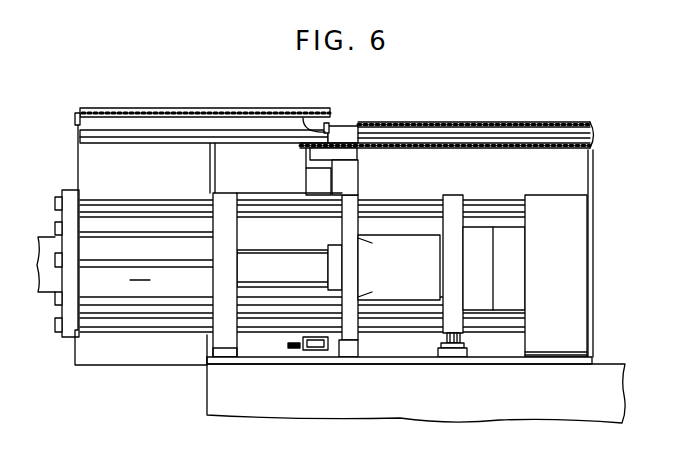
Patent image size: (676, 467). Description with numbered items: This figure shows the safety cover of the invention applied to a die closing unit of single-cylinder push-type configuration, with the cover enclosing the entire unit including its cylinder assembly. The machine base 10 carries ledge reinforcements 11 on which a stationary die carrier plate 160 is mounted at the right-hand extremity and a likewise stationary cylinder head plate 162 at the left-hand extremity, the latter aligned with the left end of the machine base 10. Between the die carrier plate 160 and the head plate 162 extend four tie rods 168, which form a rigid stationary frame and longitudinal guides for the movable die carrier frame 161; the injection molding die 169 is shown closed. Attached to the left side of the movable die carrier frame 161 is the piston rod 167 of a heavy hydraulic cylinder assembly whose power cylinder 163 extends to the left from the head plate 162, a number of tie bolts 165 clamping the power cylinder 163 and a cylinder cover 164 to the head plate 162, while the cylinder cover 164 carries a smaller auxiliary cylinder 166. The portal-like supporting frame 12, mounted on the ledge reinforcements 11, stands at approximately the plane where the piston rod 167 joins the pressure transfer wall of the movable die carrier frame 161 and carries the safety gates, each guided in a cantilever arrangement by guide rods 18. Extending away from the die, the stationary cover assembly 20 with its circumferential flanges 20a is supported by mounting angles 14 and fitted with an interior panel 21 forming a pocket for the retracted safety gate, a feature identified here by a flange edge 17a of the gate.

The machine base 10 is at (240, 404).
The ledge reinforcements 11 is at (415, 364).
The supporting frame 12 is at (290, 347).
The mounting angles 14 is at (141, 143).
The rail end 17a is at (318, 130).
The guide rods 18 is at (388, 133).
The cover assembly 20 is at (195, 108).
The circumferential flanges 20a is at (78, 113).
The interior panel 21 is at (78, 152).
The stationary die carrier plate 160 is at (577, 297).
The movable die carrier frame 161 is at (446, 205).
The cylinder head plate 162 is at (220, 330).
The power cylinder 163 is at (100, 323).
The cylinder cover 164 is at (70, 338).
The tie bolts 165 is at (152, 322).
The auxiliary cylinder 166 is at (42, 237).
The piston rod 167 is at (248, 264).
The tie rods 168 is at (483, 207).
The injection molding die 169 is at (482, 292).